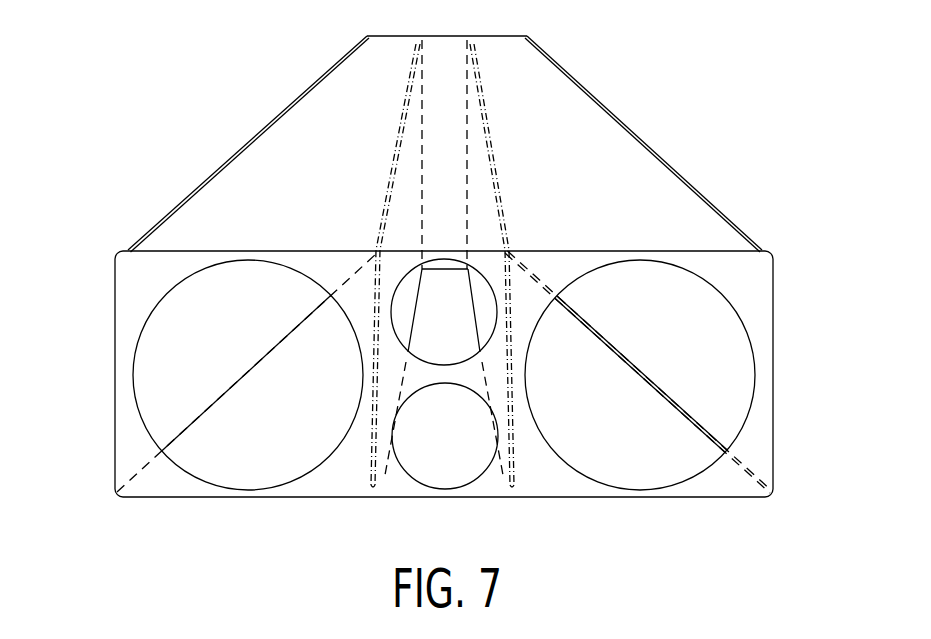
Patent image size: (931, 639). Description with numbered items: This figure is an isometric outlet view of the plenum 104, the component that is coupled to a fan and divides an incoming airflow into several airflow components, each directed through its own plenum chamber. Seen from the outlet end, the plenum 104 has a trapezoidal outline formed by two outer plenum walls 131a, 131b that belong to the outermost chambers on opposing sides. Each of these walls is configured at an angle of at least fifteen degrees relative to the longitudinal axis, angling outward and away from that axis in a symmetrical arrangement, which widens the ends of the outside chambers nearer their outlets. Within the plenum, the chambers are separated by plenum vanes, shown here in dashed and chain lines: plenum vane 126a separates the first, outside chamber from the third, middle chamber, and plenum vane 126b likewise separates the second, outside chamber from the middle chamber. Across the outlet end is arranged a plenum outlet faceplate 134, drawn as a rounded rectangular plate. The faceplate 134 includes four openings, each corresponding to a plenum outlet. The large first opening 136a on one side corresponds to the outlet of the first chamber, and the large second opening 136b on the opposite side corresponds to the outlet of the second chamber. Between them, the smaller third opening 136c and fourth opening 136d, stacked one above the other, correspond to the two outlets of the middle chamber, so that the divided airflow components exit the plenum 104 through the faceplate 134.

The plenum 104 is at (232, 42).
The outer plenum wall 131a is at (665, 165).
The outer plenum wall 131b is at (247, 143).
The plenum vane 126a is at (485, 190).
The plenum vane 126b is at (400, 140).
The plenum outlet faceplate 134 is at (128, 292).
The first opening 136a is at (643, 469).
The second opening 136b is at (247, 469).
The third opening 136c is at (462, 322).
The fourth opening 136d is at (455, 464).